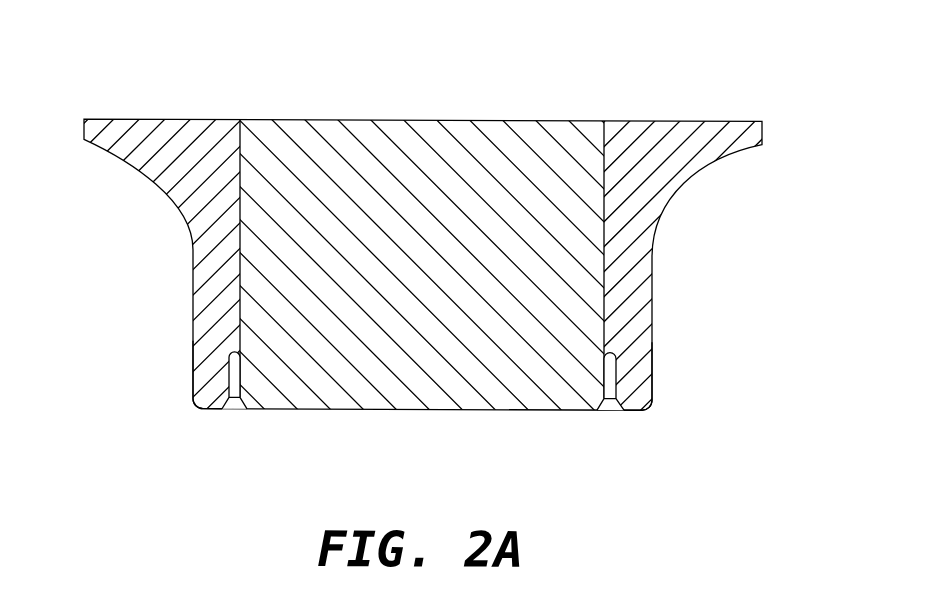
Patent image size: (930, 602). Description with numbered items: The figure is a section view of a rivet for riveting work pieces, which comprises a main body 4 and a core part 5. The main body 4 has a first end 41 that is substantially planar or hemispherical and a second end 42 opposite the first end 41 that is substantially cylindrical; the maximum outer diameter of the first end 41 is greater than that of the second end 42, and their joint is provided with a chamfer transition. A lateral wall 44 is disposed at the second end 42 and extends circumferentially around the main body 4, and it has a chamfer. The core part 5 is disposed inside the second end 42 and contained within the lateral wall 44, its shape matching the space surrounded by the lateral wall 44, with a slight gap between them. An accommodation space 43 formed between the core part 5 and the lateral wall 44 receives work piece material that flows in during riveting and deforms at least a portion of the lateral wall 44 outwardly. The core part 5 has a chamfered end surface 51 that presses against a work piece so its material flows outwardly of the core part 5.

The main body 4 is at (465, 263).
The first end 41 is at (655, 146).
The second end 42 is at (632, 383).
The accommodation space 43 is at (235, 380).
The lateral wall 44 is at (232, 363).
The core part 5 is at (518, 386).
The end surface 51 is at (433, 408).